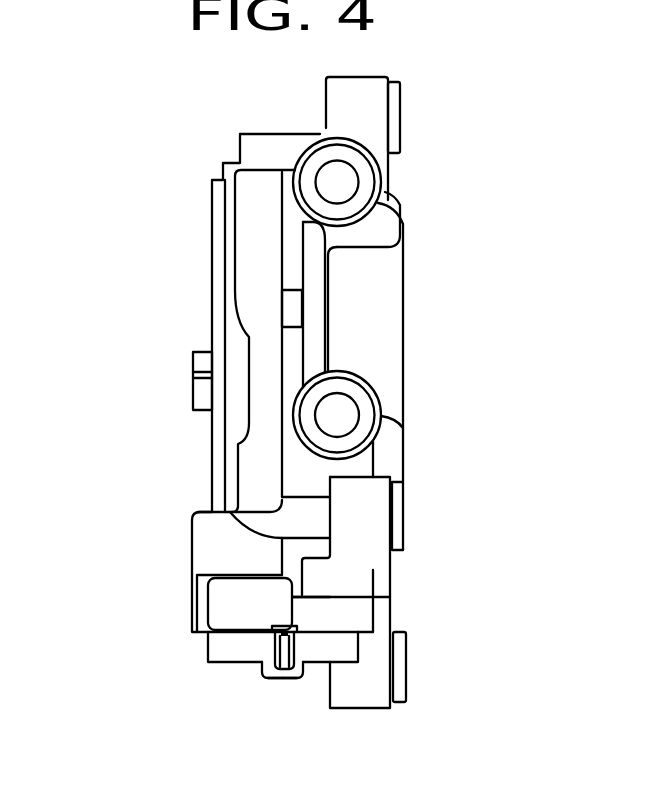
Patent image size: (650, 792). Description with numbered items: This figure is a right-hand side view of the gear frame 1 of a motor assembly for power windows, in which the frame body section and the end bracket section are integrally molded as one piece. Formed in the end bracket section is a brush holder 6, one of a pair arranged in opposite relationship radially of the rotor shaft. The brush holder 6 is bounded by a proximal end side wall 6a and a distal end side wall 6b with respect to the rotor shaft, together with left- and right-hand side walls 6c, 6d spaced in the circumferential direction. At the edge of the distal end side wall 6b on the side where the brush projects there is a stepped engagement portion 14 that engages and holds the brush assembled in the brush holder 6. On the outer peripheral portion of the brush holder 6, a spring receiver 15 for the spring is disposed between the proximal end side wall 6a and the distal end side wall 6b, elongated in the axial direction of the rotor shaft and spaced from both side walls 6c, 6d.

The gear frame 1 is at (157, 399).
The brush holder 6 is at (267, 685).
The proximal end side wall 6a is at (283, 682).
The distal end side wall 6b is at (293, 627).
The left-hand side wall 6c is at (260, 668).
The right-hand side wall 6d is at (303, 673).
The stepped engagement portion 14 is at (300, 635).
The spring receiver 15 is at (268, 645).